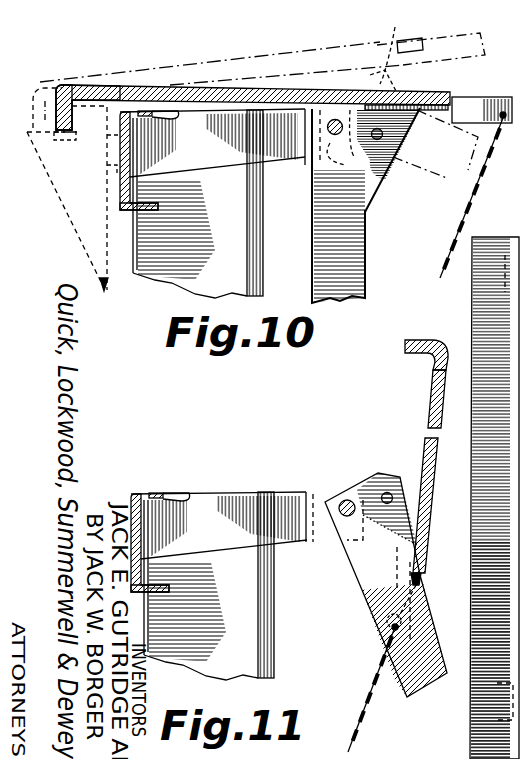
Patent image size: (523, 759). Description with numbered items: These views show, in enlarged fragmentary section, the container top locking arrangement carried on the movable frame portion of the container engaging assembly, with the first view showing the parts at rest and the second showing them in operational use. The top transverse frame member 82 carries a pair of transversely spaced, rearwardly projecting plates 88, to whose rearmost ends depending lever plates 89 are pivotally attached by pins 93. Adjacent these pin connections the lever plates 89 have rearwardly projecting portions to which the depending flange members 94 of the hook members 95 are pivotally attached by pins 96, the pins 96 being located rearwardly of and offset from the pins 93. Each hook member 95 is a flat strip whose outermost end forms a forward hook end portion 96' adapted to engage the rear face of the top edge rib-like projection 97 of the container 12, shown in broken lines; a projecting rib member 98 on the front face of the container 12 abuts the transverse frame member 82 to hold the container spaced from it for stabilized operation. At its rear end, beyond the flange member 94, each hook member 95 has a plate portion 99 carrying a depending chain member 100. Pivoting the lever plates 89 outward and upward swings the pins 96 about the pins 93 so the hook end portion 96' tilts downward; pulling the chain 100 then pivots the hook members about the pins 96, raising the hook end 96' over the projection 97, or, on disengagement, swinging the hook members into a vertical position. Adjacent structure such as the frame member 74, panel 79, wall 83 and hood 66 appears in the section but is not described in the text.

In FIG. 10, the container 12 is at (76, 240).
In FIG. 10, the hood 66 is at (356, 86).
In FIG. 10, the frame member 74 is at (487, 246).
In FIG. 10, the cab panel 79 is at (172, 272).
In FIG. 11, the cab panel 79 is at (252, 648).
In FIG. 10, the top transverse frame member 82 is at (127, 212).
In FIG. 11, the top transverse frame member 82 is at (139, 493).
In FIG. 10, the frame side wall 83 is at (500, 284).
In FIG. 11, the frame side wall 83 is at (496, 715).
In FIG. 10, the rearwardly projecting plates 88 is at (202, 165).
In FIG. 11, the rearwardly projecting plates 88 is at (215, 556).
In FIG. 10, the depending lever plates 89 is at (352, 268).
In FIG. 11, the depending lever plates 89 is at (360, 594).
In FIG. 10, the pins 93 is at (336, 137).
In FIG. 11, the pins 93 is at (344, 497).
In FIG. 10, the depending flange members 94 is at (420, 140).
In FIG. 11, the depending flange members 94 is at (415, 482).
In FIG. 10, the hook members 95 is at (178, 86).
In FIG. 11, the hook members 95 is at (428, 412).
In FIG. 10, the pins 96 is at (402, 158).
In FIG. 11, the pins 96 is at (398, 442).
In FIG. 10, the forward hook end portion 96' is at (58, 124).
In FIG. 10, the top edge rib-like projection 97 is at (118, 86).
In FIG. 10, the projecting rib member 98 is at (106, 186).
In FIG. 10, the plate portion 99 is at (448, 26).
In FIG. 11, the plate portion 99 is at (418, 605).
In FIG. 10, the chain member 100 is at (467, 210).
In FIG. 11, the chain member 100 is at (362, 733).